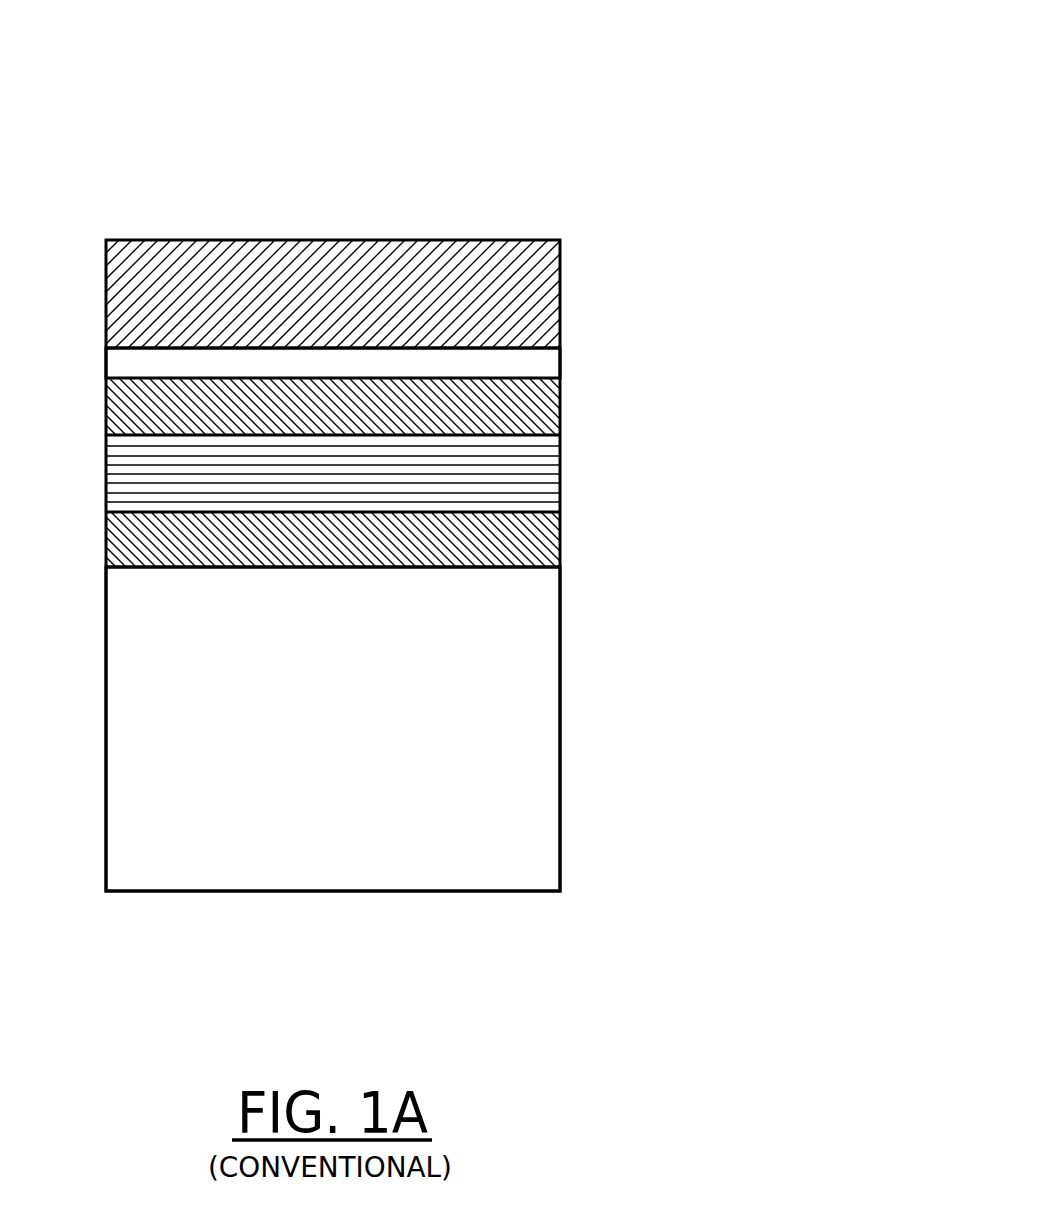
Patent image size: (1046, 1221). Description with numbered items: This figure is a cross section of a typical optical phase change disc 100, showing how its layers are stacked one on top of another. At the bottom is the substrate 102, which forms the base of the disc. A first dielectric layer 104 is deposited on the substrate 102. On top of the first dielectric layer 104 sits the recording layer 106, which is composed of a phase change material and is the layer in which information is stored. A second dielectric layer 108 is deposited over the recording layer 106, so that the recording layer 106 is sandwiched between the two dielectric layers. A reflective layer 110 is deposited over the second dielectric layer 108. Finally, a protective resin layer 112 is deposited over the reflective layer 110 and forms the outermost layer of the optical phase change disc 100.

The optical phase change disc 100 is at (147, 53).
The substrate 102 is at (97, 728).
The first dielectric layer 104 is at (97, 540).
The recording layer 106 is at (97, 472).
The second dielectric layer 108 is at (97, 408).
The reflective layer 110 is at (97, 365).
The protective resin layer 112 is at (97, 295).